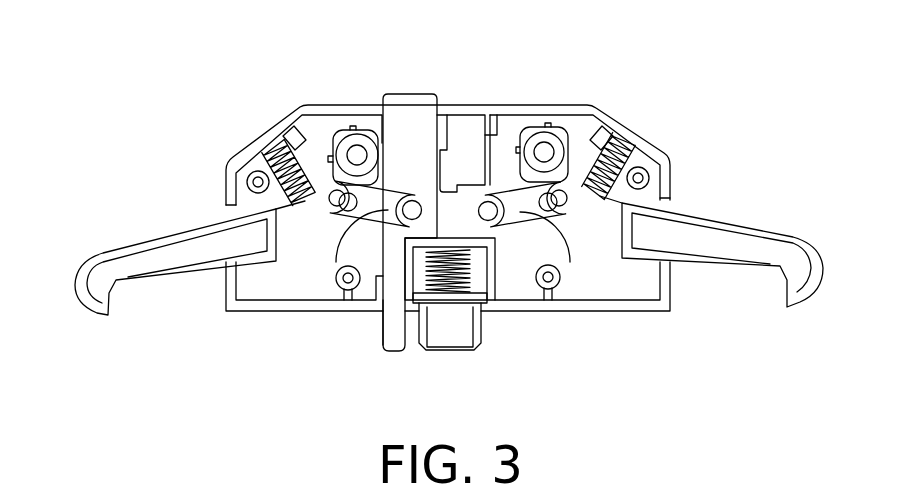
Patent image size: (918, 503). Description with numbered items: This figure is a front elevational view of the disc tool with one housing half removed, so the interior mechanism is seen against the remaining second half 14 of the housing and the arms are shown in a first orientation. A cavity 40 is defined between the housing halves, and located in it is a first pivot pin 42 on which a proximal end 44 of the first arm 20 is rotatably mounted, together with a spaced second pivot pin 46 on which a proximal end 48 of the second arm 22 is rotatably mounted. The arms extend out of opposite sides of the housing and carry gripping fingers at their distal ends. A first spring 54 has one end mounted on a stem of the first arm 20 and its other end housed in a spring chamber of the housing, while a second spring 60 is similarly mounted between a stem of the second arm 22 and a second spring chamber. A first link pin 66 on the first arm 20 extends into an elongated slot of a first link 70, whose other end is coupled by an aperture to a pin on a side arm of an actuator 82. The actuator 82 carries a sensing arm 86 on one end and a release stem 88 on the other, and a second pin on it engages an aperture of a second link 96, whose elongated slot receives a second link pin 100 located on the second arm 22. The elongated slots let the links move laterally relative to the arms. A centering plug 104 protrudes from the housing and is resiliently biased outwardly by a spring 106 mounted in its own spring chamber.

The second half 14 is at (463, 115).
The first arm 20 is at (723, 245).
The second arm 22 is at (185, 255).
The cavity 40 is at (635, 277).
The first pivot pin 42 is at (549, 127).
The proximal end 44 is at (543, 151).
The second pivot pin 46 is at (358, 154).
The proximal end 48 is at (353, 125).
The first spring 54 is at (625, 145).
The second spring 60 is at (277, 145).
The first link pin 66 is at (549, 207).
The first link 70 is at (566, 262).
The actuator 82 is at (445, 215).
The sensing arm 86 is at (390, 332).
The release stem 88 is at (405, 107).
The second link 96 is at (332, 264).
The second link pin 100 is at (348, 206).
The centering plug 104 is at (450, 330).
The spring 106 is at (470, 258).